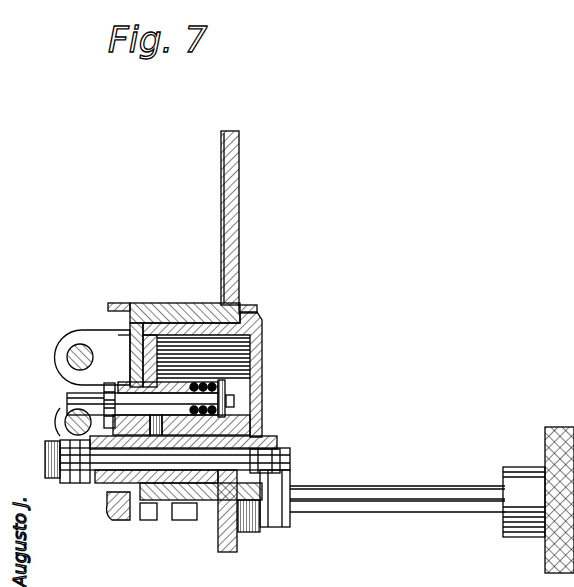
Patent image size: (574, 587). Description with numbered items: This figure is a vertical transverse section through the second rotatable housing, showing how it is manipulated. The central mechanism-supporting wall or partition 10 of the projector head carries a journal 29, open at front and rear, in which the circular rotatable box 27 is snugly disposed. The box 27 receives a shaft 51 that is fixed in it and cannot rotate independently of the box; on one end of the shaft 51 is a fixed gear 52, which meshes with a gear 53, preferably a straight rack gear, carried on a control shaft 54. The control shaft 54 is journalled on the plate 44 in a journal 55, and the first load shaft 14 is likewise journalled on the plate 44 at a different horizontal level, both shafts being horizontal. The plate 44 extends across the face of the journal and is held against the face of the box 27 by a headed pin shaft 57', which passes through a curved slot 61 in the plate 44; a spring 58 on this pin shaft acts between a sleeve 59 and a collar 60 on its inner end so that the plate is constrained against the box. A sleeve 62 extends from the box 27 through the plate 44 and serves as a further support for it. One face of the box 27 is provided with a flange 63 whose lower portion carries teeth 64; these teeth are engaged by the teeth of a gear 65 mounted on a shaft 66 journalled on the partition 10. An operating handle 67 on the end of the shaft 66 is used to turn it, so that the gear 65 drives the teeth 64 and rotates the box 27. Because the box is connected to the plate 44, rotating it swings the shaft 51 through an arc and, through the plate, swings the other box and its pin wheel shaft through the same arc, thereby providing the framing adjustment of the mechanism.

The mechanism-supporting wall or partition 10 is at (232, 239).
The journal 29 is at (182, 305).
The plate 44 is at (115, 303).
The flange 63 is at (262, 325).
The spring 58 is at (252, 356).
The collar 60 is at (233, 410).
The headed pin shaft 57' is at (275, 388).
The box 27 is at (248, 417).
The shaft 51 is at (243, 437).
The gear 52 is at (82, 484).
The sleeve 59 is at (167, 437).
The sleeve 62 is at (125, 473).
The teeth 64 is at (262, 490).
The gear 65 is at (250, 532).
The shaft 66 is at (392, 490).
The operating handle 67 is at (545, 447).
The first load shaft 14 is at (66, 348).
The curved slot 61 is at (122, 370).
The control shaft 54 is at (67, 398).
The journal 55 is at (67, 400).
The gear 53 is at (65, 422).